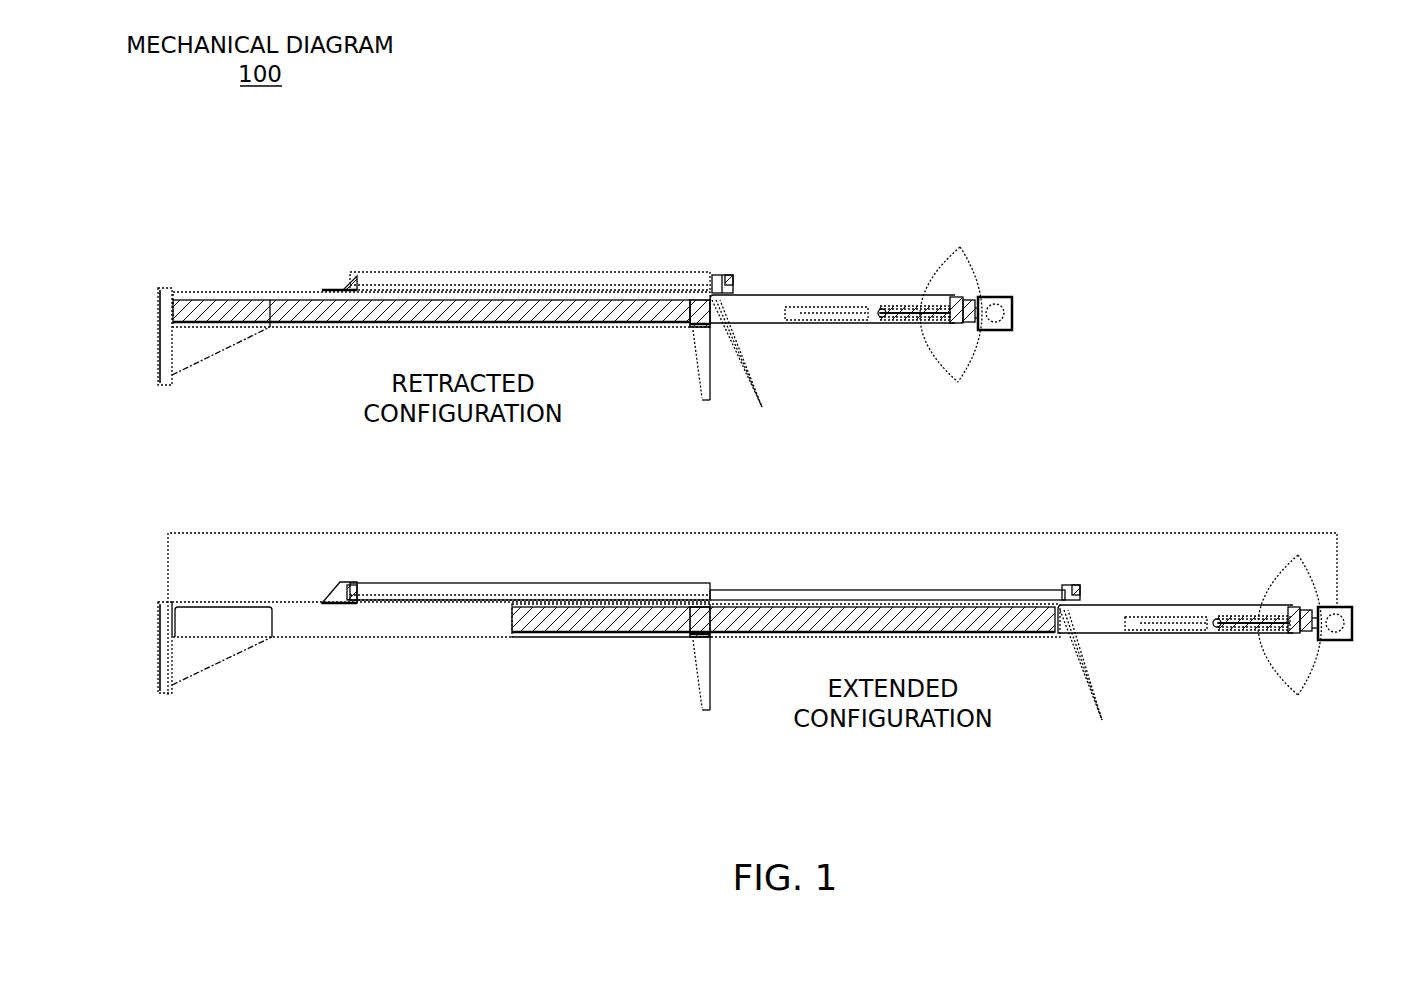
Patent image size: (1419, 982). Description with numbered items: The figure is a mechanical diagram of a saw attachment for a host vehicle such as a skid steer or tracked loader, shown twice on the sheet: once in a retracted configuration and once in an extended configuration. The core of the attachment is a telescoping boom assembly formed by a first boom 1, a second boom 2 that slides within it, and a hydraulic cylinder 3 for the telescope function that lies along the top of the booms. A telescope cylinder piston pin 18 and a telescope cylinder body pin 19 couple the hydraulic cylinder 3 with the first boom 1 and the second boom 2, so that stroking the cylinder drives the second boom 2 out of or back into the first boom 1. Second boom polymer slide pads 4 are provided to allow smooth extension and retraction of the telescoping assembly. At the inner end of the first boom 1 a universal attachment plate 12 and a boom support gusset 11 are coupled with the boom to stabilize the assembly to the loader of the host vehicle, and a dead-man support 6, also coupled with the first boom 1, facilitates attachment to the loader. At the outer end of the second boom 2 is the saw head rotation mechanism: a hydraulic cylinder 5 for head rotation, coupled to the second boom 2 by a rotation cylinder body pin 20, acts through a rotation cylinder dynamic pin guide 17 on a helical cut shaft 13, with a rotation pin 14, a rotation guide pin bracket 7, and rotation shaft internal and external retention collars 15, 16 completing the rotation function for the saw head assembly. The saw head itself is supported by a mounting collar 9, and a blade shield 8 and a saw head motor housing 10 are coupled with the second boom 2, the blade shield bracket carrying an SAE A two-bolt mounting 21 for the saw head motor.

The first boom 1 is at (230, 296).
The second boom 2 is at (765, 296).
The hydraulic cylinder for telescope function 3 is at (545, 277).
The second boom polymer slide pads 4 is at (915, 516).
The hydraulic cylinder for head rotation 5 is at (835, 319).
The dead-man support for boom 6 is at (710, 400).
The rotation guide pin bracket 7 is at (880, 307).
The blade shield 8 is at (948, 269).
The mounting collar for saw head 9 is at (980, 349).
The saw head motor housing 10 is at (1012, 298).
The boom support gusset 11 is at (205, 343).
The universal attachment plate 12 is at (160, 292).
The helical cut shaft for head rotation 13 is at (884, 321).
The rotation pin 14 is at (886, 310).
The rotation shaft internal retention collar 15 is at (940, 293).
The rotation shaft external retention collar 16 is at (968, 305).
The rotation cylinder dynamic pin guide 17 is at (881, 325).
The telescope cylinder piston pin 18 is at (733, 281).
The telescope cylinder body pin 19 is at (347, 279).
The rotation cylinder body pin 20 is at (788, 319).
The SAE A two-bolt mounting in blade shield bracket 21 is at (1012, 325).